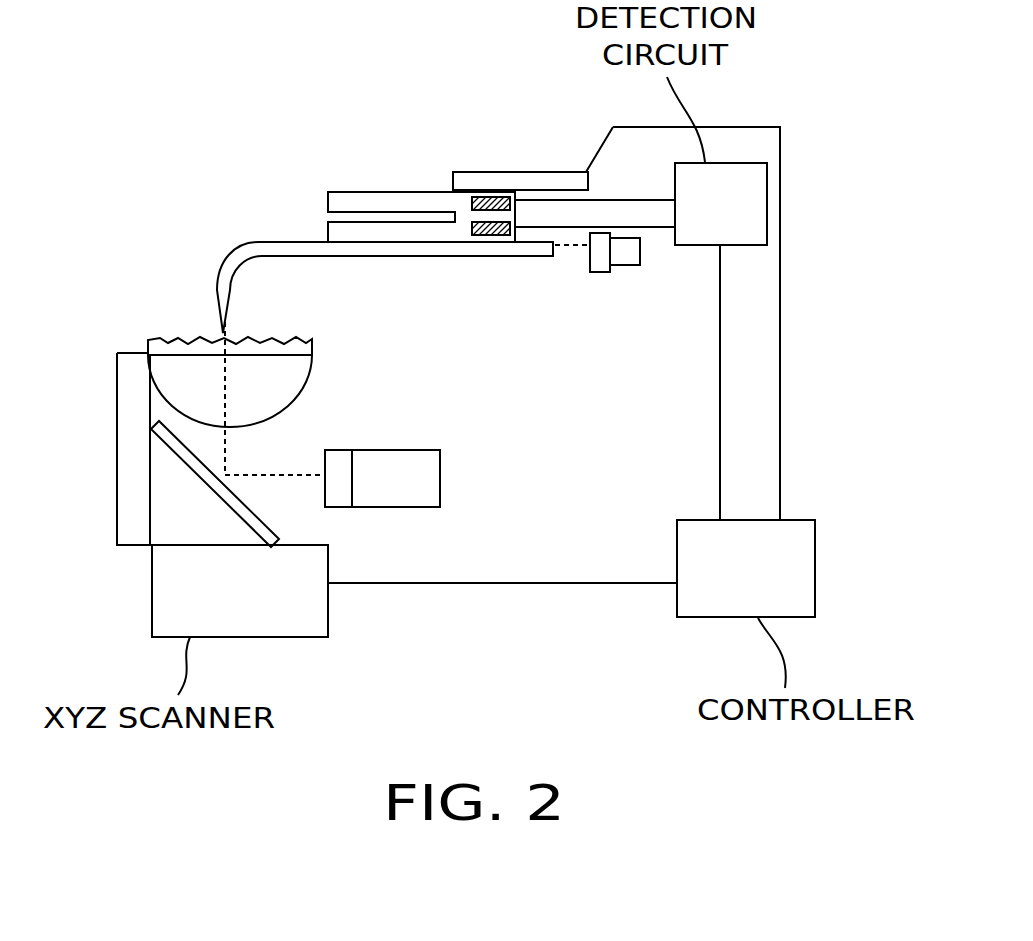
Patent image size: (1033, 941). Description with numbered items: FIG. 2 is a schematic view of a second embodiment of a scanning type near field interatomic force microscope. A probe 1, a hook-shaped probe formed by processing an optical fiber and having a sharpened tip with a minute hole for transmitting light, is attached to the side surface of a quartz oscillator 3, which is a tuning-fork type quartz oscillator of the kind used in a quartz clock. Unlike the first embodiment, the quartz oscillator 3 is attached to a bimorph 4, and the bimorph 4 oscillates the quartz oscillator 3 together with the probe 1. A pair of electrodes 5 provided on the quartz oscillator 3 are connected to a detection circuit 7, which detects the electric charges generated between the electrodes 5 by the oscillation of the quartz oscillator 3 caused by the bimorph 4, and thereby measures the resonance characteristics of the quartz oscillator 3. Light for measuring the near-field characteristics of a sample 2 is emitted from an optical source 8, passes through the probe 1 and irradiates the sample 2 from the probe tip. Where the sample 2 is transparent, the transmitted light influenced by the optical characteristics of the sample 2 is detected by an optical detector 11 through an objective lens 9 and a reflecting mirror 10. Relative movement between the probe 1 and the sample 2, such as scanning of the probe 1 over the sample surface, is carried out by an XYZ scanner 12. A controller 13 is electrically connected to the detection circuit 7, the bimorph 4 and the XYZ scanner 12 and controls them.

The probe 1 is at (223, 262).
The sample 2 is at (197, 337).
The quartz oscillator 3 is at (353, 192).
The bimorph 4 is at (500, 172).
The electrodes 5 is at (485, 232).
The detection circuit 7 is at (737, 163).
The optical source 8 is at (620, 265).
The objective lens 9 is at (312, 378).
The reflecting mirror 10 is at (263, 517).
The optical detector 11 is at (392, 450).
The XYZ scanner 12 is at (283, 637).
The controller 13 is at (815, 558).